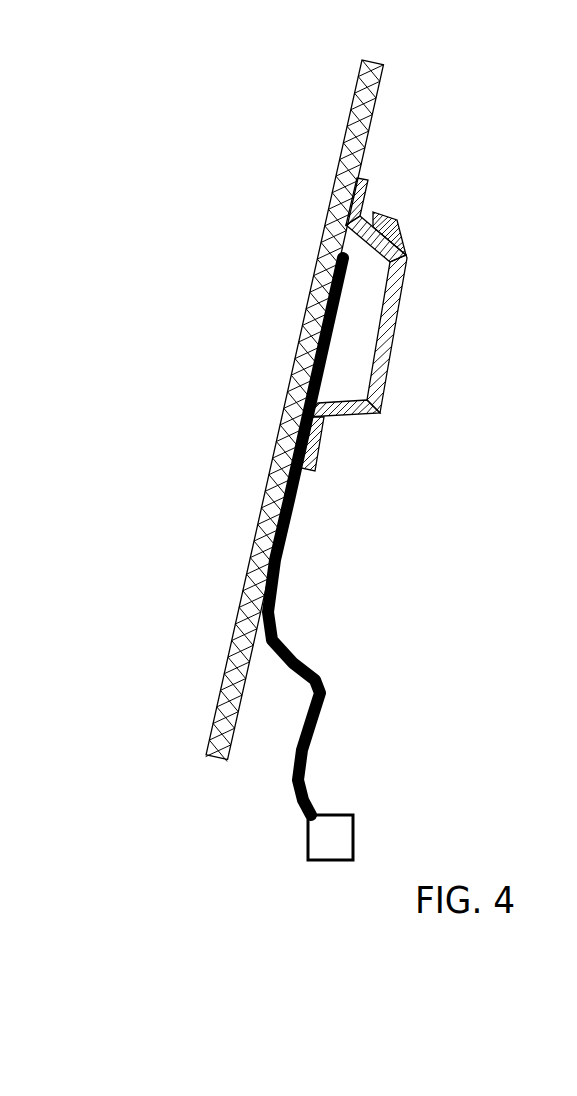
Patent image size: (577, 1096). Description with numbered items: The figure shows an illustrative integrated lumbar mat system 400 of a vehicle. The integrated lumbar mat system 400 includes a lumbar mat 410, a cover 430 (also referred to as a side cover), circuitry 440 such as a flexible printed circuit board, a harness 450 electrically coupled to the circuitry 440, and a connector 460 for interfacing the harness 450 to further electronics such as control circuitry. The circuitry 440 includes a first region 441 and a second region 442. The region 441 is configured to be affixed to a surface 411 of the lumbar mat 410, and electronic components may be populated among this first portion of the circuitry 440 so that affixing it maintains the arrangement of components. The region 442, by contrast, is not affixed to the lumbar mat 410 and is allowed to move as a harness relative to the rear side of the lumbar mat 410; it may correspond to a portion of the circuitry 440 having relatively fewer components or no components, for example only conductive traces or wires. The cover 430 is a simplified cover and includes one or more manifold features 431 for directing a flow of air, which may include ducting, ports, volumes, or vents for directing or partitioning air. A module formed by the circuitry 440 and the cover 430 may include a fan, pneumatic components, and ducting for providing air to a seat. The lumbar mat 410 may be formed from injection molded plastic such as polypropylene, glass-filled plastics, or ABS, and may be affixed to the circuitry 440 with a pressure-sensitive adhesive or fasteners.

The integrated lumbar mat system 400 is at (470, 55).
The lumbar mat 410 is at (354, 98).
The surface 411 is at (252, 660).
The cover 430 is at (399, 303).
The manifold features 431 is at (396, 222).
The circuitry 440 is at (295, 550).
The region 441 is at (303, 248).
The region 442 is at (345, 595).
The harness 450 is at (302, 813).
The connector 460 is at (353, 833).